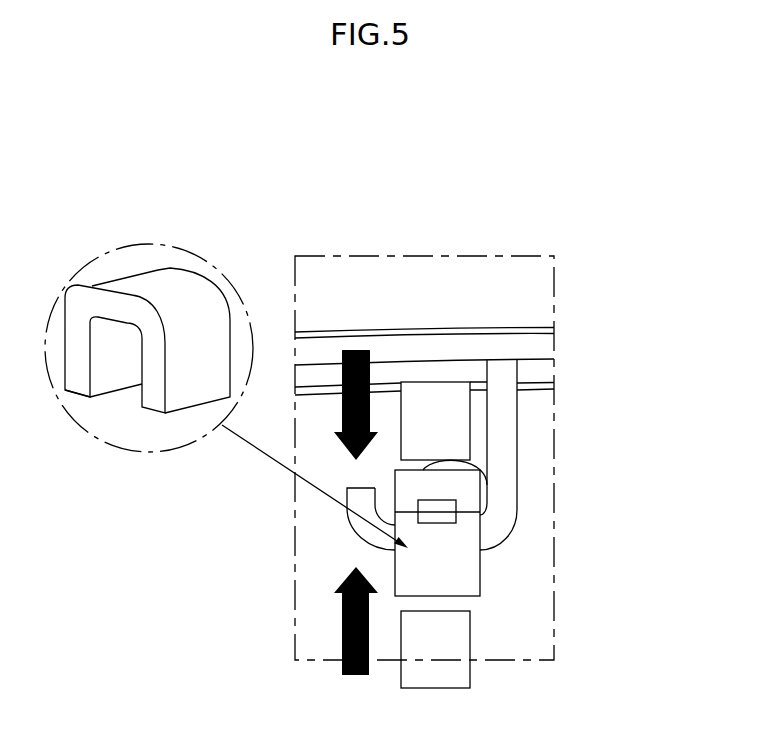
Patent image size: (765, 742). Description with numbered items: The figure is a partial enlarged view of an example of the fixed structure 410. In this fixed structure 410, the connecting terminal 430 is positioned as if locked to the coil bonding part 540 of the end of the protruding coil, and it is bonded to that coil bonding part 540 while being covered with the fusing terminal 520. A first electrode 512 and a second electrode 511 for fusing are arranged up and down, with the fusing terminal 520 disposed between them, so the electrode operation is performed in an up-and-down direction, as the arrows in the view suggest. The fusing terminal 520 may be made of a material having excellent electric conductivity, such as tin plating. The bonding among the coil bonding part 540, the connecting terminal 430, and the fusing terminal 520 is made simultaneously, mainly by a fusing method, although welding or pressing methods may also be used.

The fixed structure 410 is at (623, 177).
The connecting terminal 430 is at (508, 492).
The second electrode 511 is at (450, 637).
The first electrode 512 is at (440, 417).
The fusing terminal 520 is at (462, 488).
The coil bonding part 540 is at (438, 516).